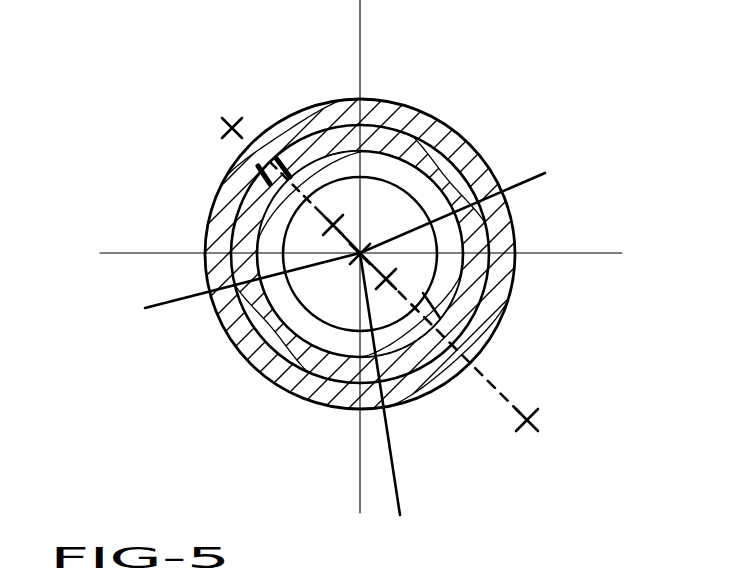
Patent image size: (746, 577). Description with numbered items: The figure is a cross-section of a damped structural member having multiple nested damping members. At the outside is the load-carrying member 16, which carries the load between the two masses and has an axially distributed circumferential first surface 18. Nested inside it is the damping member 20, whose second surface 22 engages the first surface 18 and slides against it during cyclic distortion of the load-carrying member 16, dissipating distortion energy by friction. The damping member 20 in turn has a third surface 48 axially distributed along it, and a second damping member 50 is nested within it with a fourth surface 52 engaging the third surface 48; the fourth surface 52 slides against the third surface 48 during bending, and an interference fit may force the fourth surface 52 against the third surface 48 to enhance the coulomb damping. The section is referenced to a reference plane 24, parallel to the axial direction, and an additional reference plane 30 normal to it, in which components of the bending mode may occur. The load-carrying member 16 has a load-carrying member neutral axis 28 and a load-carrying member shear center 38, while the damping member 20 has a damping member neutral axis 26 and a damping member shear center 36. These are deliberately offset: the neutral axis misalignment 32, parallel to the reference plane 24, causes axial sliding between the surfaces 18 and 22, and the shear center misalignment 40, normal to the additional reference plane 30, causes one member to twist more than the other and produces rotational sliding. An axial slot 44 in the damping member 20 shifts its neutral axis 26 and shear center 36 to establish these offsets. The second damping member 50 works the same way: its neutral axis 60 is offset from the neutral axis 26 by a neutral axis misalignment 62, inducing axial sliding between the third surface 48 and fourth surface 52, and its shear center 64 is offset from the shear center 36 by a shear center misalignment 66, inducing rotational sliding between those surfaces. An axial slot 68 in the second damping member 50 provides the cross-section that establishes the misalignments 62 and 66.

The load-carrying member 16 is at (463, 152).
The first surface 18 is at (415, 138).
The damping member 20 is at (477, 270).
The second surface 22 is at (418, 122).
The reference plane 24 is at (362, 62).
The damping member neutral axis 26 is at (410, 345).
The load-carrying member neutral axis 28 is at (430, 393).
The additional reference plane 30 is at (597, 253).
The neutral axis misalignment 32 is at (477, 206).
The damping member shear center 36 is at (527, 420).
The load-carrying member shear center 38 is at (430, 393).
The shear center misalignment 40 is at (497, 388).
The axial slot 44 is at (287, 165).
The third surface 48 is at (297, 293).
The second damping member 50 is at (333, 340).
The fourth surface 52 is at (280, 358).
The neutral axis 60 is at (333, 225).
The neutral axis misalignment 62 is at (231, 290).
The shear center 64 is at (248, 143).
The shear center misalignment 66 is at (246, 141).
The axial slot 68 is at (413, 318).